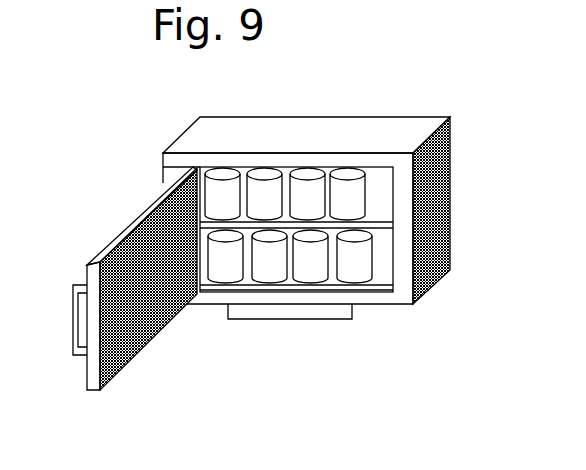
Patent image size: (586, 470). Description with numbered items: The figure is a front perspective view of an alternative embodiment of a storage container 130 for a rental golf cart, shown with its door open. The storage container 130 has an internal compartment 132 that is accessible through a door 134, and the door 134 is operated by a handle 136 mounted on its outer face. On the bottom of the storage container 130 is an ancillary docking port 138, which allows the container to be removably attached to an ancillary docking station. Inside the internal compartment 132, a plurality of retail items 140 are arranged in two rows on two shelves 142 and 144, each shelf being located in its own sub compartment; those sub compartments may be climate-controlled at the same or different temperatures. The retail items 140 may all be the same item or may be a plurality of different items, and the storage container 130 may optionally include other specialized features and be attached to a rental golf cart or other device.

The storage container 130 is at (392, 78).
The internal compartment 132 is at (376, 180).
The door 134 is at (178, 286).
The handle 136 is at (82, 285).
The ancillary docking port 138 is at (352, 318).
The retail items 140 is at (270, 215).
The shelf 142 is at (233, 293).
The shelf 144 is at (380, 230).